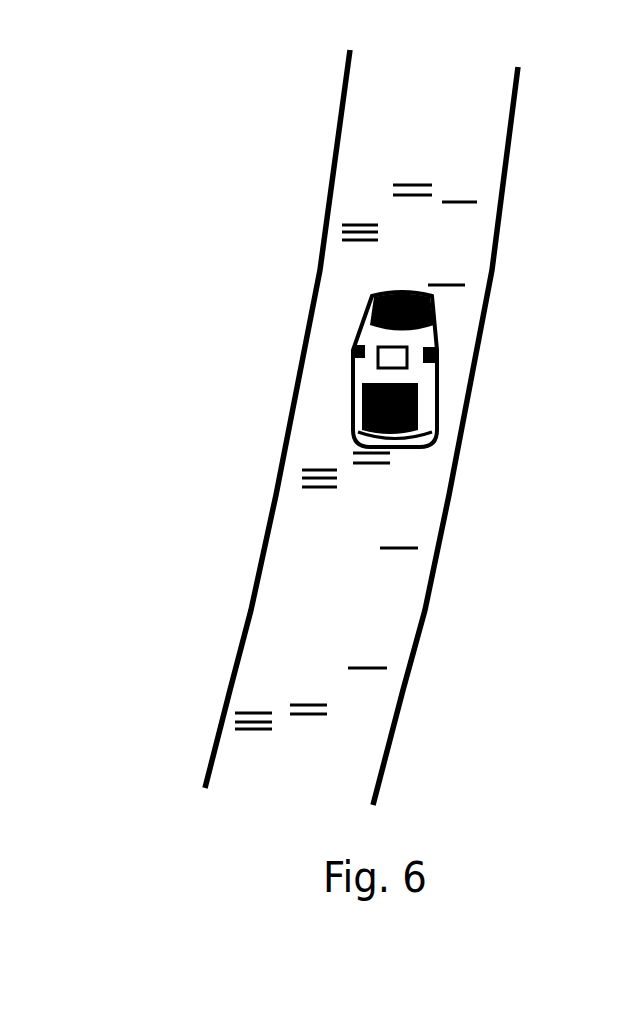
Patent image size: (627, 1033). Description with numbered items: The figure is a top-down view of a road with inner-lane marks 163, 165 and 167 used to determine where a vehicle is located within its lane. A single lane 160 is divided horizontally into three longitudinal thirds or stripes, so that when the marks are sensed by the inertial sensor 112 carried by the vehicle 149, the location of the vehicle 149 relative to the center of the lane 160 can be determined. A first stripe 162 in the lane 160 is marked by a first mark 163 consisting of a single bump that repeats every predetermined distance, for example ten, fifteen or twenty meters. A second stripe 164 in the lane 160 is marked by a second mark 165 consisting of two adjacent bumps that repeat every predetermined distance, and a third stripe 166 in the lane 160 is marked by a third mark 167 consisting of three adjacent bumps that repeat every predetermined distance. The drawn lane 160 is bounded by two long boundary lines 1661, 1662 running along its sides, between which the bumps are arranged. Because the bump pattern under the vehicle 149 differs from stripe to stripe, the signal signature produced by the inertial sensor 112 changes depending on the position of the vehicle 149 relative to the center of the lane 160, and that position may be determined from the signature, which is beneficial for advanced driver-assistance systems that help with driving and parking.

The lane 160 is at (488, 695).
The first stripe 162 is at (496, 436).
The first mark 163 is at (470, 197).
The second stripe 164 is at (418, 252).
The second mark 165 is at (320, 707).
The third stripe 166 is at (269, 419).
The inner-lane mark 167 is at (343, 225).
The left lane boundary line 1661 is at (305, 333).
The right lane boundary line 1662 is at (483, 347).
The inertial sensor 112 is at (402, 356).
The vehicle 149 is at (400, 408).